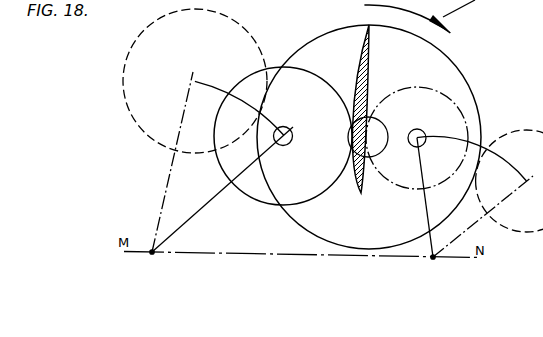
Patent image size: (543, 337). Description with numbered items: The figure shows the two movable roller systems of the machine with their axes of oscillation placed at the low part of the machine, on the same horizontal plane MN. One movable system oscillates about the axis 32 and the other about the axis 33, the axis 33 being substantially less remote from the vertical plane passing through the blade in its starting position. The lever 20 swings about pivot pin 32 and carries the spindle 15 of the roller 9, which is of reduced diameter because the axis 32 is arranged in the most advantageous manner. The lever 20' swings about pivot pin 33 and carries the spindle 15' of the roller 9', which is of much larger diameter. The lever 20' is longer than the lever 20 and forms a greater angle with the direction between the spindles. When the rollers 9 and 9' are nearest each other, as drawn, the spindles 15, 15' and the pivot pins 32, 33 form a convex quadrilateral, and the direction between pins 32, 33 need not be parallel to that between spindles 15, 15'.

The roller 9 is at (417, 125).
The roller 9' is at (283, 120).
The spindle 15 is at (450, 116).
The spindle 15' is at (291, 120).
The lever 20 is at (411, 197).
The lever 20' is at (222, 189).
The axis of oscillation 32 is at (433, 255).
The axis of oscillation 33 is at (156, 251).